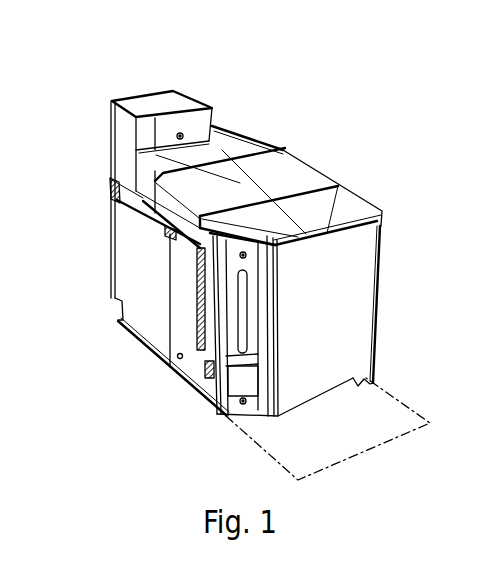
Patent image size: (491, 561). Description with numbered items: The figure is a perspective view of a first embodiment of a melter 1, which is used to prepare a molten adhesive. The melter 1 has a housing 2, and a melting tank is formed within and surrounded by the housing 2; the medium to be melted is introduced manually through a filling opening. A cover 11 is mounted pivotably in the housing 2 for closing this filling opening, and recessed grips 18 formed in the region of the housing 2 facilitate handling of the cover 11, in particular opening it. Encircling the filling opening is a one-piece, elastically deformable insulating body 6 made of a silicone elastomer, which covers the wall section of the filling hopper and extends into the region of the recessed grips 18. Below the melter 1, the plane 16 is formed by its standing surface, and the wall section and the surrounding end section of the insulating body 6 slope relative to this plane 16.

The melter 1 is at (297, 84).
The housing 2 is at (350, 317).
The insulating body 6 is at (117, 202).
The cover 11 is at (305, 182).
The plane 16 is at (372, 418).
The recessed grips 18 is at (170, 236).